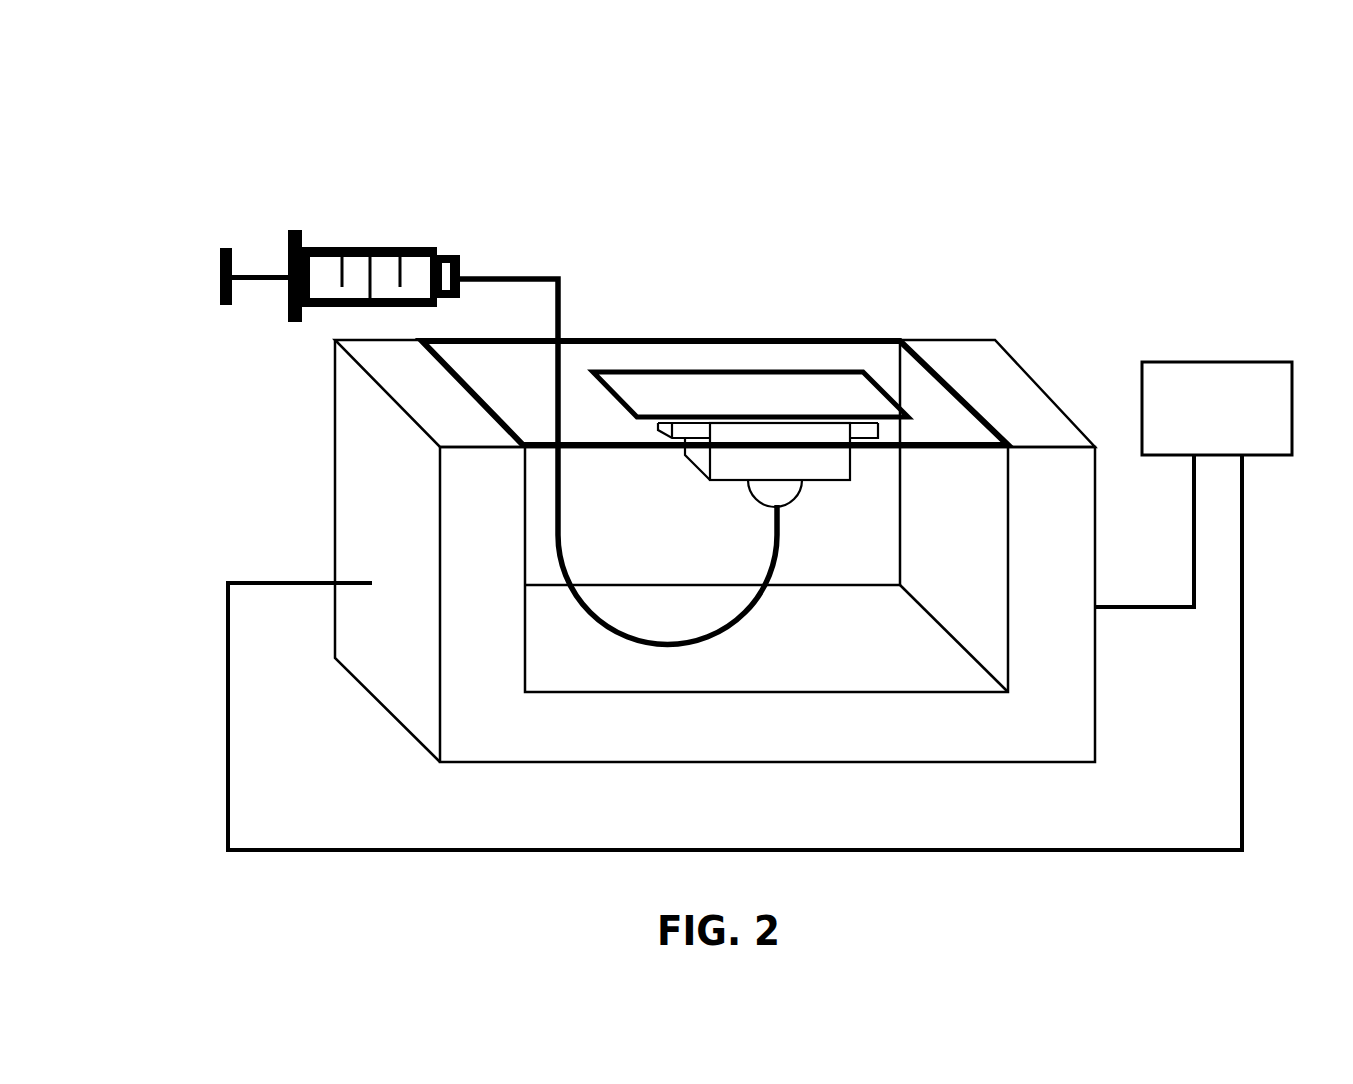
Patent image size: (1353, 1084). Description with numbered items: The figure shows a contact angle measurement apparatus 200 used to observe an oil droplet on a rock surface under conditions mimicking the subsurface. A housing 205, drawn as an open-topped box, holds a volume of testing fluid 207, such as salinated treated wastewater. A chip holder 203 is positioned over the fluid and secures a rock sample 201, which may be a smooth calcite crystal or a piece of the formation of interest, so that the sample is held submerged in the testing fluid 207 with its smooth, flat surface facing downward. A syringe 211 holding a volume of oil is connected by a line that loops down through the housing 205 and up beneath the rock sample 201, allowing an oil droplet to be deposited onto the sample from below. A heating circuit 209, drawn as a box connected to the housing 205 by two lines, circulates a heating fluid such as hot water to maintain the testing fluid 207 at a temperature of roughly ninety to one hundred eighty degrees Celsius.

The contact angle measurement apparatus 200 is at (186, 161).
The rock sample 201 is at (775, 435).
The chip holder 203 is at (673, 393).
The housing 205 is at (362, 464).
The testing fluid 207 is at (953, 470).
The heating circuit 209 is at (1211, 362).
The syringe 211 is at (373, 247).